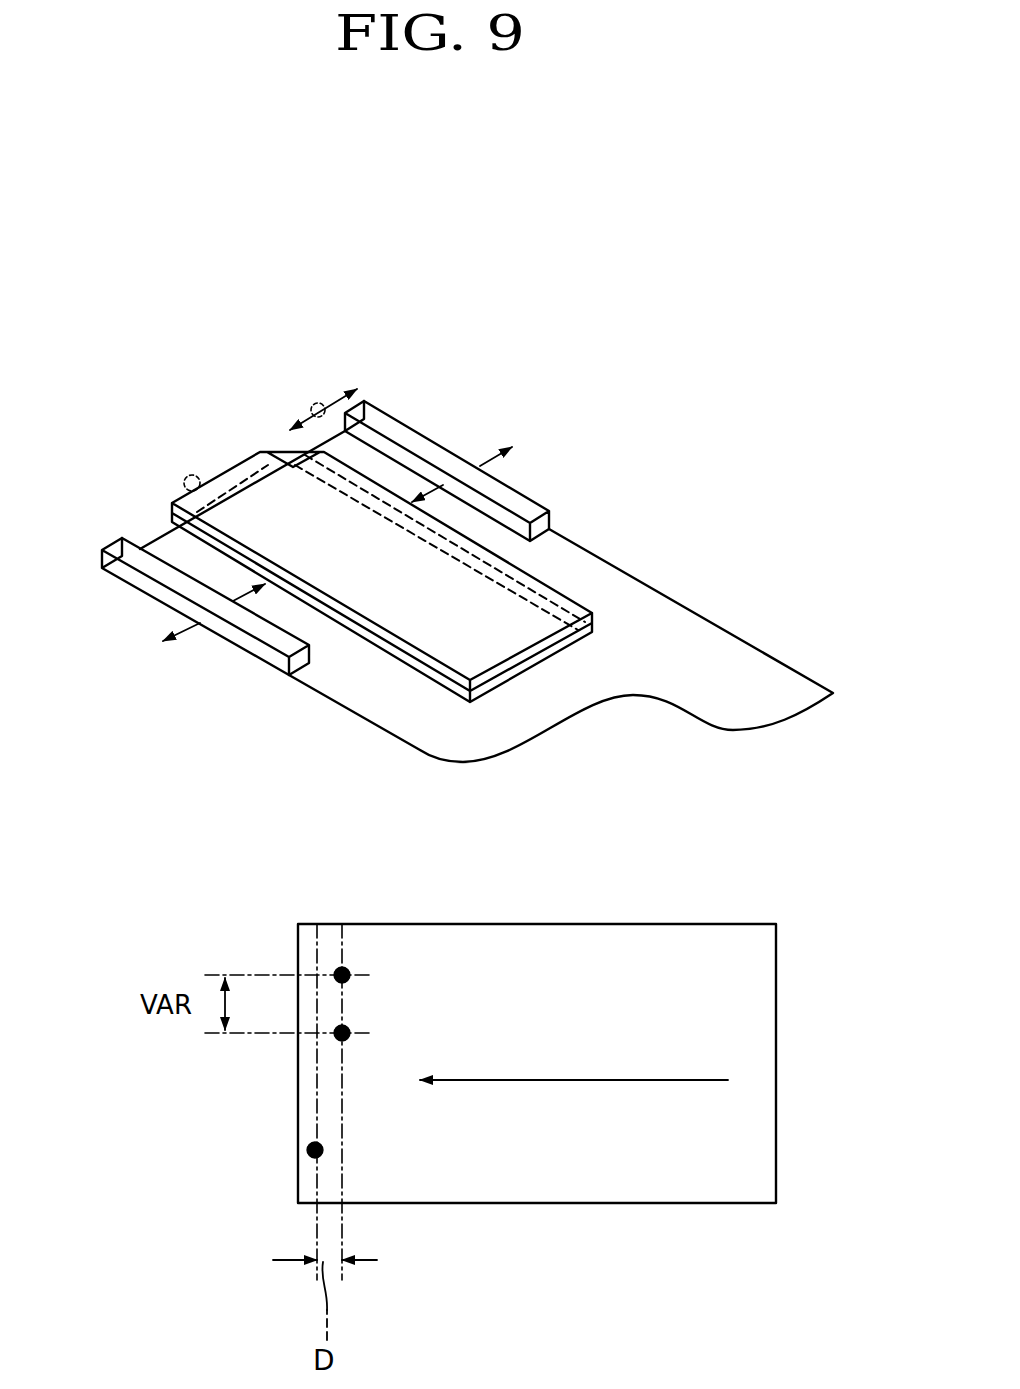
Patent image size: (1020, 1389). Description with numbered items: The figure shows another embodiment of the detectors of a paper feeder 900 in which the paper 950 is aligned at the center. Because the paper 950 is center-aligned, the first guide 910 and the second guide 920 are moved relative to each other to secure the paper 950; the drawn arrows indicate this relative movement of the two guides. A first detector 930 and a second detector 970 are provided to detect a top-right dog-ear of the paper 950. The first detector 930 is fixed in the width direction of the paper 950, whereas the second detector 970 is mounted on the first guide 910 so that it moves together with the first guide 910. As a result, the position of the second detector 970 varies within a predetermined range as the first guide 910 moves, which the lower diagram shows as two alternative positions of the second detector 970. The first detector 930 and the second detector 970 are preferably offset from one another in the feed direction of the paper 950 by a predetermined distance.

The paper feeder 900 is at (762, 320).
The first guide 910 is at (522, 500).
The second guide 920 is at (293, 660).
The first detector 930 is at (190, 476).
The paper 950 is at (540, 613).
The second detector 970 is at (311, 403).